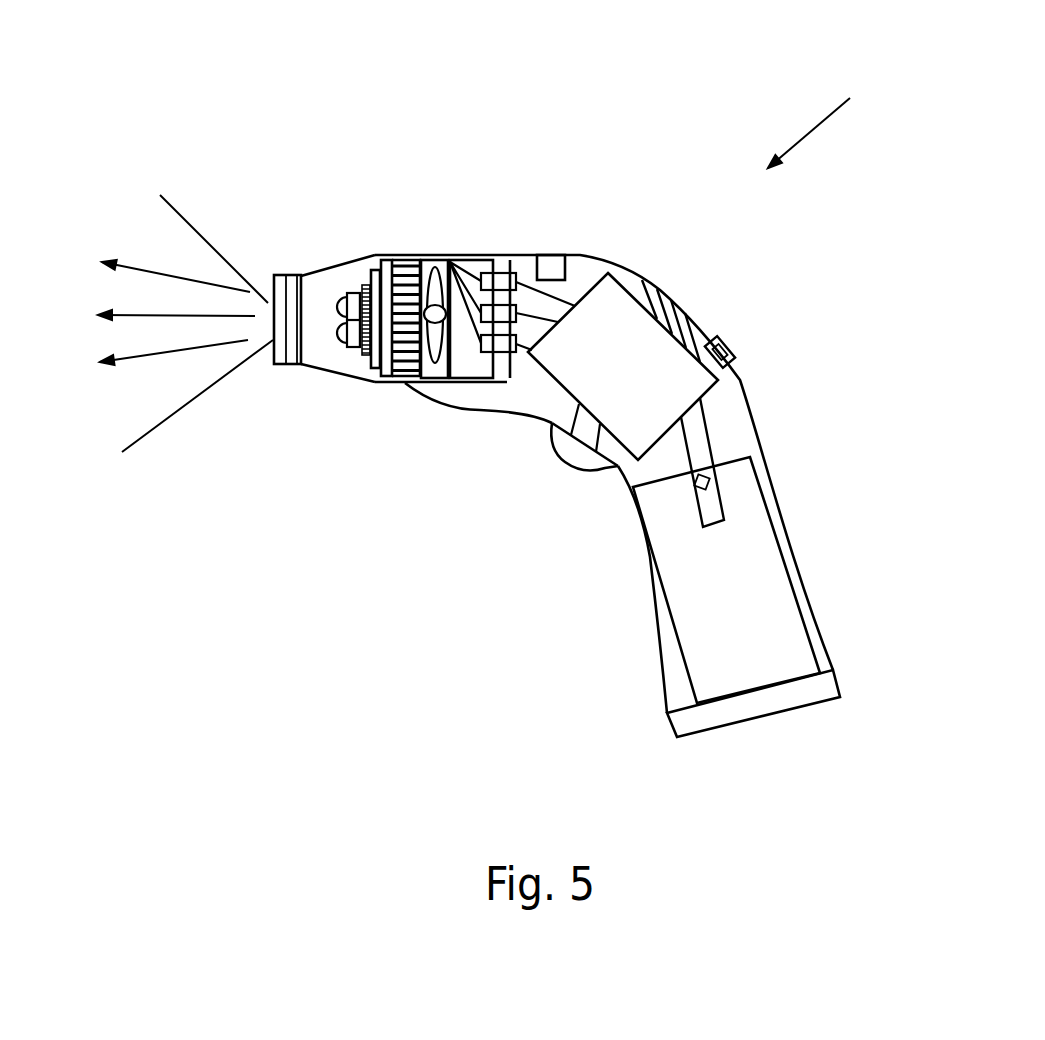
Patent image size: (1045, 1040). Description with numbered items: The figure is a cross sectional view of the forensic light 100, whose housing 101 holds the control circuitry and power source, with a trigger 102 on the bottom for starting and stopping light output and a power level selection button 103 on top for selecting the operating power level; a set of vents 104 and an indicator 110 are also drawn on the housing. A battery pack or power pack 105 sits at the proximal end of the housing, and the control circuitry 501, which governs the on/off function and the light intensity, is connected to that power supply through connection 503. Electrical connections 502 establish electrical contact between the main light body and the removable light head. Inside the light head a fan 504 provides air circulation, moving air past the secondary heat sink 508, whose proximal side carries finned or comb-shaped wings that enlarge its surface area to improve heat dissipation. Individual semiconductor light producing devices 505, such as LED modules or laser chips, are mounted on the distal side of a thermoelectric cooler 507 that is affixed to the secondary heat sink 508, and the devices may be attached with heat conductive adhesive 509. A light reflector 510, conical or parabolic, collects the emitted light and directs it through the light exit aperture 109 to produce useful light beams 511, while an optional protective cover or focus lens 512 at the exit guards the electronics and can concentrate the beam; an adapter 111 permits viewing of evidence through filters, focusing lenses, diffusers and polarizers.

The forensic light 100 is at (835, 112).
The housing 101 is at (760, 450).
The trigger 102 is at (578, 455).
The power level selection button 103 is at (728, 348).
The vents 104 is at (703, 317).
The battery pack or power pack 105 is at (748, 597).
The light exit aperture 109 is at (195, 226).
The indicator 110 is at (552, 253).
The adapter 111 is at (290, 273).
The control circuitry 501 is at (613, 322).
The electrical connections 502 is at (498, 260).
The connection 503 is at (705, 482).
The fan 504 is at (435, 258).
The semiconductor light producing devices 505 is at (352, 330).
The thermoelectric cooler 507 is at (370, 268).
The secondary heat sink 508 is at (390, 253).
The heat conductive adhesive 509 is at (366, 383).
The light reflector 510 is at (327, 350).
The light beams 511 is at (152, 312).
The protective cover or focus lens 512 is at (181, 414).